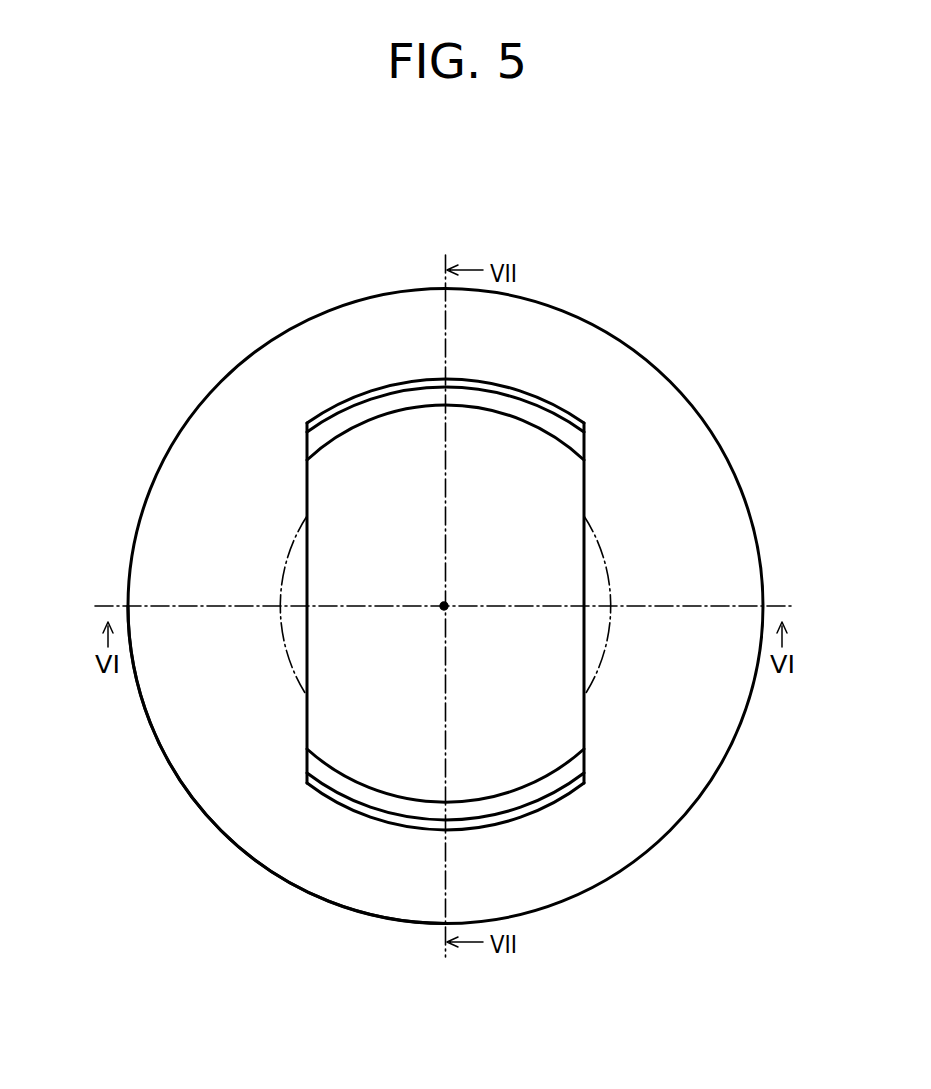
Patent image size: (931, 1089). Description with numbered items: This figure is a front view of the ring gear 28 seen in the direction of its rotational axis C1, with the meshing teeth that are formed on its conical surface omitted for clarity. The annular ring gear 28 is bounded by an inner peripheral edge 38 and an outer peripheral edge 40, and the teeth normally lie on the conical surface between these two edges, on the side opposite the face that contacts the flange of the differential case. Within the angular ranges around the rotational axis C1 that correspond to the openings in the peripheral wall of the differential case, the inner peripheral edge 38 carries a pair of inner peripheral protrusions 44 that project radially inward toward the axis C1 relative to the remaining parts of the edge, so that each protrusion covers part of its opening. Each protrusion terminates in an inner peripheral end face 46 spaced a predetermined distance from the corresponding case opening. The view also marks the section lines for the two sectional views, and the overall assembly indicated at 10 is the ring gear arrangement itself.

The damper device 10 is at (157, 242).
The ring gear 28 is at (213, 862).
The inner peripheral edge 38 is at (430, 373).
The outer peripheral edge 40 is at (557, 318).
The inner peripheral protrusion 44 is at (292, 590).
The inner peripheral end face 46 is at (307, 625).
The rotational axis C1 is at (446, 603).